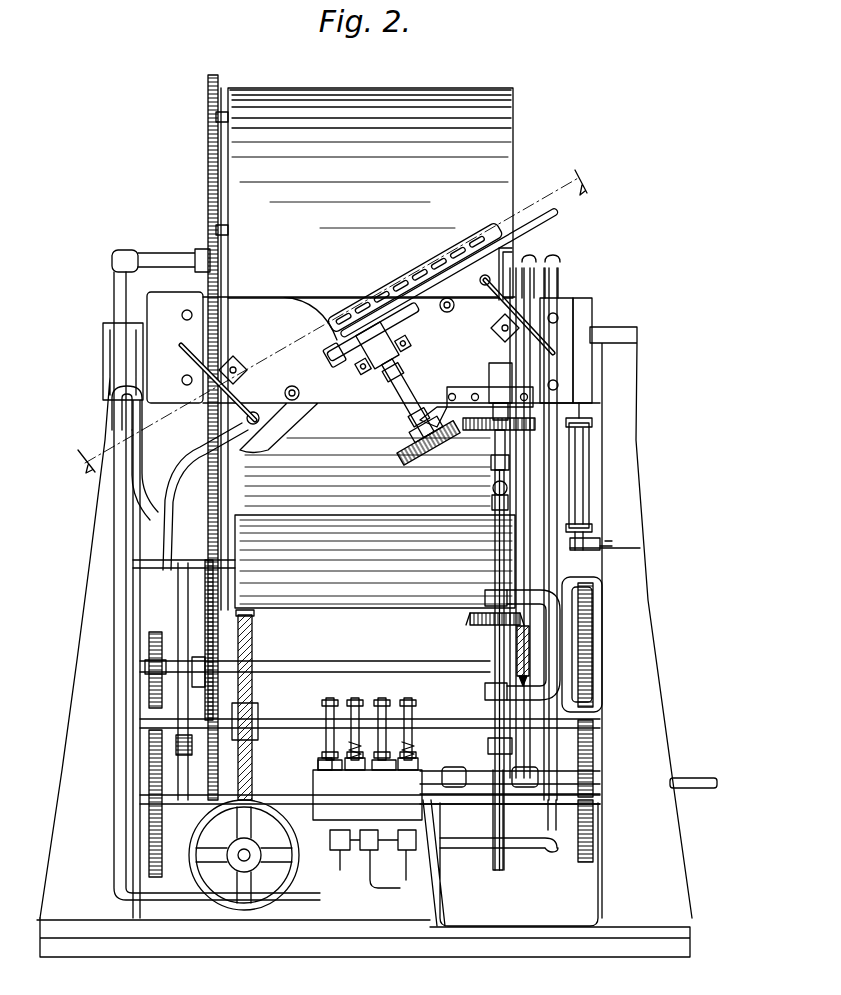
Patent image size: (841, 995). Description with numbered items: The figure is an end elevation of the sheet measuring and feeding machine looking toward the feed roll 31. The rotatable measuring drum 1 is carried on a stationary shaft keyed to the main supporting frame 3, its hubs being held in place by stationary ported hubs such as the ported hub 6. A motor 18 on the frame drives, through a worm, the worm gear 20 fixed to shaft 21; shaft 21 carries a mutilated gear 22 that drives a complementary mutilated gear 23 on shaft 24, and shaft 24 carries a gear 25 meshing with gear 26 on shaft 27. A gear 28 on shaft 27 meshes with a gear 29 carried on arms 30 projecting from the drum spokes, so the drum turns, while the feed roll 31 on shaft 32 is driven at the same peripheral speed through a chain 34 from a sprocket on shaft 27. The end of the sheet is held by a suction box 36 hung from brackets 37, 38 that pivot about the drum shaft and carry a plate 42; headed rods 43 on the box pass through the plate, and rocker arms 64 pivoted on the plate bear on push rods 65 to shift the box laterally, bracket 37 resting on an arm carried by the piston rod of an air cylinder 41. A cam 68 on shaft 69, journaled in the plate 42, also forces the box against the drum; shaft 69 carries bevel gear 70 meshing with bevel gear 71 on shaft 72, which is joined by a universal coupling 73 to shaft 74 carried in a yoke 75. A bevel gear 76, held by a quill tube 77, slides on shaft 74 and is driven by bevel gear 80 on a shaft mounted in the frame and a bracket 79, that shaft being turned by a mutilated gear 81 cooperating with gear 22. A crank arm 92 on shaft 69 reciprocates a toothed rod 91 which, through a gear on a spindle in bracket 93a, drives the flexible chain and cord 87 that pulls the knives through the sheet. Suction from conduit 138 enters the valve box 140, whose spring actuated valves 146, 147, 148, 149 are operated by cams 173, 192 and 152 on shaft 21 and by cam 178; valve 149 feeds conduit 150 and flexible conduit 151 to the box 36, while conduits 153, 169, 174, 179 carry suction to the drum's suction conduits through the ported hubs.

The measuring drum 1 is at (490, 92).
The main supporting frame 3 is at (96, 535).
The ported hub 6 is at (333, 322).
The motor 18 is at (262, 805).
The worm gear 20 is at (258, 738).
The shaft 21 is at (445, 722).
The mutilated gear 22 is at (598, 760).
The complementary mutilated gear 23 is at (598, 845).
The shaft 24 is at (192, 796).
The gear 25 is at (146, 832).
The gear 26 is at (156, 630).
The shaft 27 is at (305, 672).
The gear 28 is at (252, 634).
The gear 29 is at (211, 76).
The arms 30 is at (230, 110).
The feed roll 31 is at (375, 561).
The shaft 32 is at (140, 568).
The chain 34 is at (598, 548).
The suction box 36 is at (283, 414).
The bracket 37 is at (578, 300).
The bracket 38 is at (149, 296).
The air cylinder 41 is at (590, 460).
The plate 42 is at (300, 300).
The headed rods 43 is at (295, 386).
The rocker arms 64 is at (213, 362).
The push rod 65 is at (253, 410).
The cam 68 is at (412, 322).
The shaft 69 is at (408, 386).
The bevel gear 70 is at (408, 462).
The bevel gear 71 is at (478, 432).
The shaft 72 is at (491, 465).
The universal coupling 73 is at (492, 490).
The shaft 74 is at (493, 549).
The yoke 75 is at (484, 592).
The bevel gear 76 is at (470, 622).
The quill tube 77 is at (515, 640).
The bracket 79 is at (597, 582).
The bevel gear 80 is at (484, 688).
The mutilated gear 81 is at (596, 612).
The flexible chain and cord 87 is at (486, 248).
The rod 91 is at (550, 212).
The crank arm 92 is at (374, 332).
The bracket 93a is at (512, 258).
The conduit 138 is at (700, 780).
The valve box 140 is at (420, 785).
The valve 146 is at (407, 770).
The valve 147 is at (382, 772).
The valve 148 is at (344, 775).
The valve 149 is at (318, 765).
The conduit 150 is at (113, 752).
The flexible conduit 151 is at (152, 468).
The cam 152 is at (320, 705).
The conduit 153 is at (488, 746).
The conduit 169 is at (522, 856).
The cam 173 is at (414, 710).
The conduit 174 is at (184, 752).
The cam 178 is at (350, 720).
The conduit 179 is at (176, 252).
The cam 192 is at (392, 725).